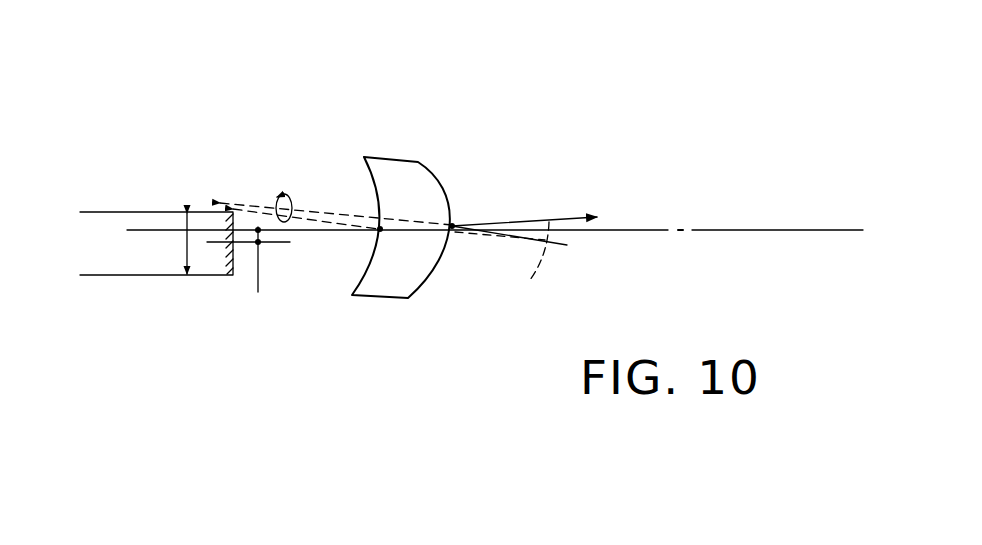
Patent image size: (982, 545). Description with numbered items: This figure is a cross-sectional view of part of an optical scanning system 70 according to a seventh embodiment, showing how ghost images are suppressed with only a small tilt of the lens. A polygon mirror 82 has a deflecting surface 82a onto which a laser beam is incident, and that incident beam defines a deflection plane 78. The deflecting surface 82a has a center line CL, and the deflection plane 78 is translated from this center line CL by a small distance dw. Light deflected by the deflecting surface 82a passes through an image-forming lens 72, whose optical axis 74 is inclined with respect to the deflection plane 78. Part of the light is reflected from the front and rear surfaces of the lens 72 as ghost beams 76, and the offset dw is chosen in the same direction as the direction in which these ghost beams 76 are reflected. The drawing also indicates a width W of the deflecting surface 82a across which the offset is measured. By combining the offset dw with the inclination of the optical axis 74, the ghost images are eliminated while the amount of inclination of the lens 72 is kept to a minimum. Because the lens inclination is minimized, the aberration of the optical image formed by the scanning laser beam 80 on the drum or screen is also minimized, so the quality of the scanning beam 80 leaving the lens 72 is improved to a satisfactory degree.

The optical coupling arrangement 70 is at (125, 128).
The image-forming lens 72 is at (398, 170).
The optical axis 74 is at (530, 280).
The ghost beams 76 is at (290, 195).
The deflection plane 78 is at (840, 231).
The scanning laser beam 80 is at (548, 218).
The polygon mirror 82 is at (160, 217).
The deflecting surface 82a is at (120, 258).
The fiber width W is at (165, 243).
The center line CL is at (256, 248).
The small distance dw is at (266, 239).